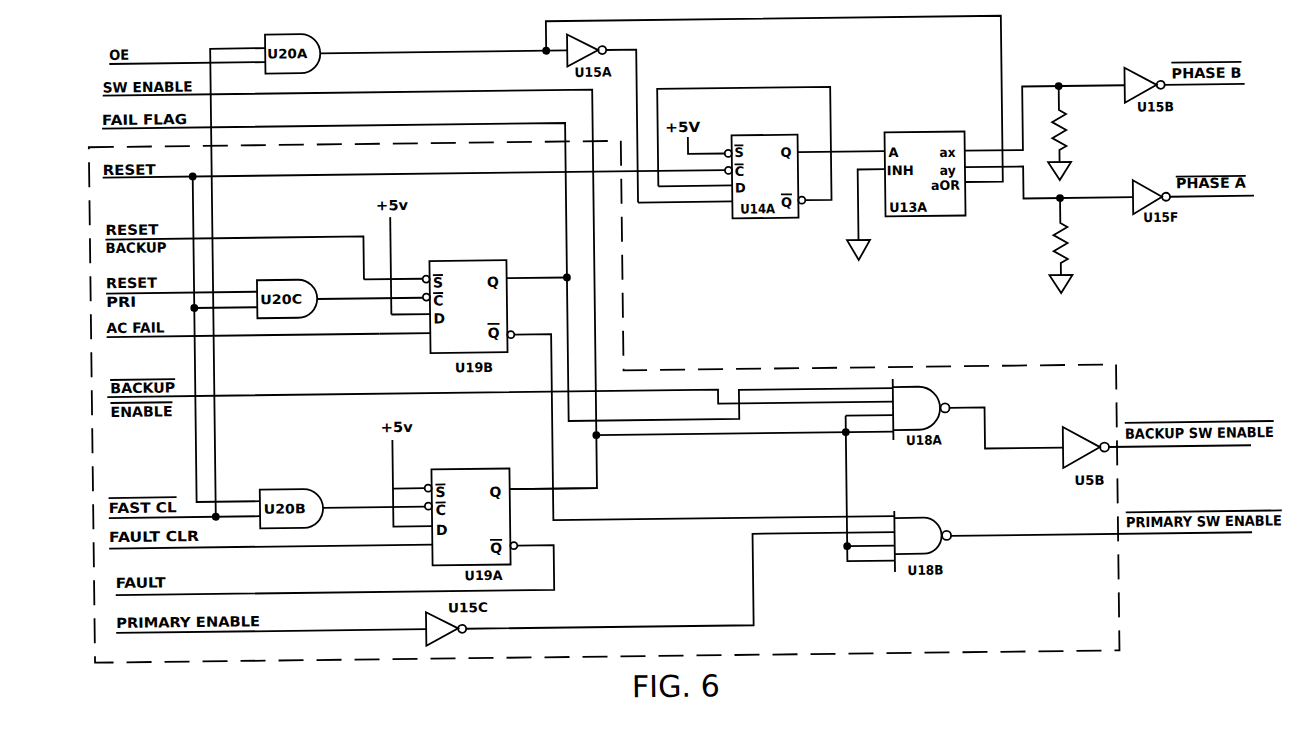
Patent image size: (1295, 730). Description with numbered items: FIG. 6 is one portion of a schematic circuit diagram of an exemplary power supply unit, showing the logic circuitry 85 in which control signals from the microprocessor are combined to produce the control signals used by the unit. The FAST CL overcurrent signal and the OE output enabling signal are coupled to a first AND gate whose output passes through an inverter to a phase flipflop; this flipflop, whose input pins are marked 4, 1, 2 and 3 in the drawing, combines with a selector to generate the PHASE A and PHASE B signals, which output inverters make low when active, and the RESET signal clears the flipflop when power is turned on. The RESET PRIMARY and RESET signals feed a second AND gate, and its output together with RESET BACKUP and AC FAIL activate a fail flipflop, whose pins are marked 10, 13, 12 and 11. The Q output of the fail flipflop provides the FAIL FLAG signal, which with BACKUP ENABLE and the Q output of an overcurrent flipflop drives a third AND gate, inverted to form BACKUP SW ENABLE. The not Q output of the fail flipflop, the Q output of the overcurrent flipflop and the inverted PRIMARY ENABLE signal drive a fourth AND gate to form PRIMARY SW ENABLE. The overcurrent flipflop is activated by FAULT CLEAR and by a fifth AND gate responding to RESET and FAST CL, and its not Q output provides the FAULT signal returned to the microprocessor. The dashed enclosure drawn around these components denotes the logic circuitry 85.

The logic circuitry 85 is at (1116, 586).
The U19B set input pin 10 is at (393, 272).
The U19B clear input pin 13 is at (370, 290).
The U19B D input pin 12 is at (410, 306).
The U19B clock input pin 11 is at (404, 327).
The U14A set input pin 4 is at (706, 144).
The U14A clear input pin 1 is at (691, 163).
The U14A D input pin 2 is at (695, 177).
The U14A clock input pin 3 is at (685, 194).